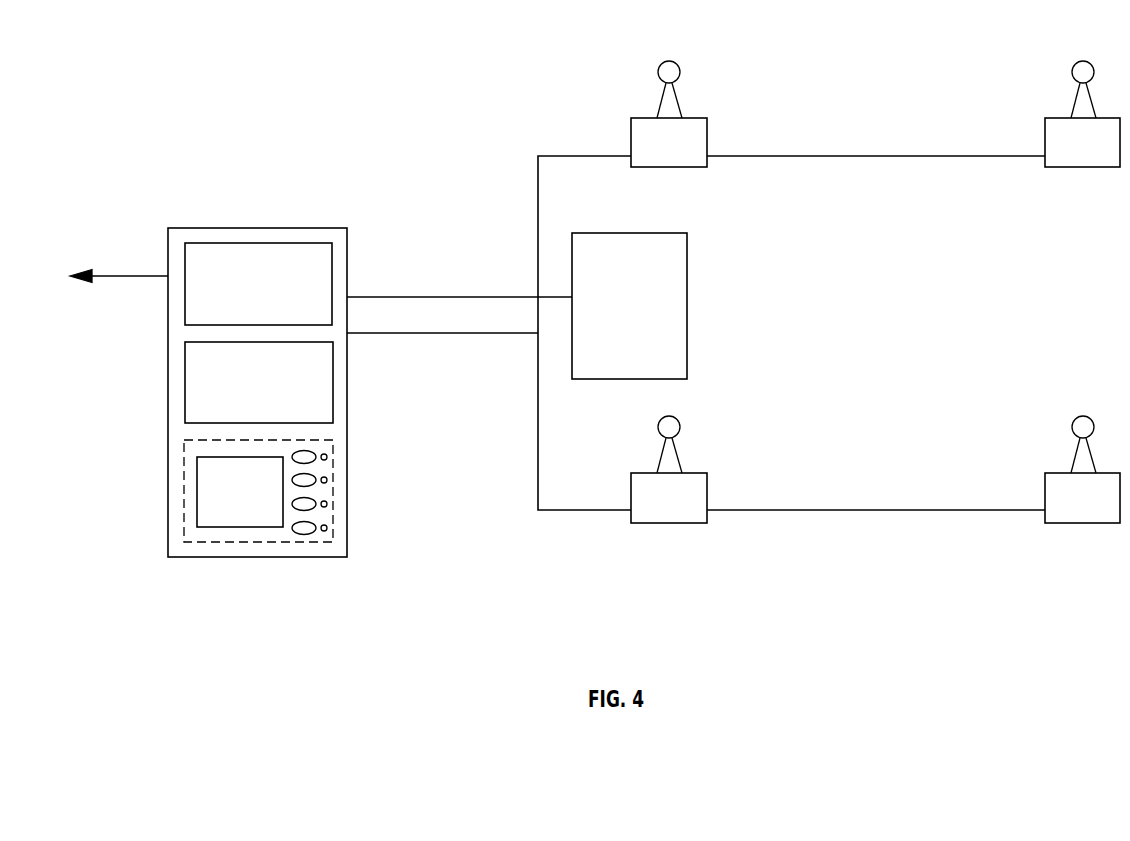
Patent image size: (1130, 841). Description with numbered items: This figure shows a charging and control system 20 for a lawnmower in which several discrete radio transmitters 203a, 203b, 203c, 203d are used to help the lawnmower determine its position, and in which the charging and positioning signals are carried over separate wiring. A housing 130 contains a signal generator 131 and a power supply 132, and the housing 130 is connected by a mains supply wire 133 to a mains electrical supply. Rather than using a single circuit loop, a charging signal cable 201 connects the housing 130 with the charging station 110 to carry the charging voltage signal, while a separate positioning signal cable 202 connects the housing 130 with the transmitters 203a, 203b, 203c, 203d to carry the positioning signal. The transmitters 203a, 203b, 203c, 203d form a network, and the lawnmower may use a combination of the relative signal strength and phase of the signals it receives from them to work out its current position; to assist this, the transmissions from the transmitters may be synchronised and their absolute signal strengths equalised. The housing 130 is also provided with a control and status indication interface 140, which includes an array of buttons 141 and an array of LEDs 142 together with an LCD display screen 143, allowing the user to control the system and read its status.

The network system 20 is at (872, 345).
The charging station 110 is at (644, 316).
The housing 130 is at (267, 227).
The signal generator 131 is at (272, 295).
The power supply 132 is at (272, 393).
The mains supply wire 133 is at (122, 275).
The control and status indication interface 140 is at (265, 545).
The buttons 141 is at (301, 537).
The LEDs 142 is at (326, 536).
The LCD display screen 143 is at (195, 498).
The charging signal cable 201 is at (418, 296).
The positioning signal cable 202 is at (466, 334).
The radio transmitter 203a is at (688, 153).
The radio transmitter 203b is at (1102, 153).
The radio transmitter 203c is at (688, 508).
The radio transmitter 203d is at (1102, 508).